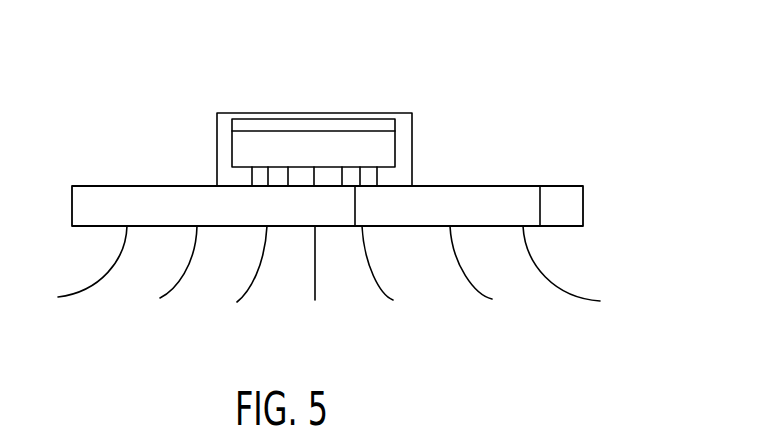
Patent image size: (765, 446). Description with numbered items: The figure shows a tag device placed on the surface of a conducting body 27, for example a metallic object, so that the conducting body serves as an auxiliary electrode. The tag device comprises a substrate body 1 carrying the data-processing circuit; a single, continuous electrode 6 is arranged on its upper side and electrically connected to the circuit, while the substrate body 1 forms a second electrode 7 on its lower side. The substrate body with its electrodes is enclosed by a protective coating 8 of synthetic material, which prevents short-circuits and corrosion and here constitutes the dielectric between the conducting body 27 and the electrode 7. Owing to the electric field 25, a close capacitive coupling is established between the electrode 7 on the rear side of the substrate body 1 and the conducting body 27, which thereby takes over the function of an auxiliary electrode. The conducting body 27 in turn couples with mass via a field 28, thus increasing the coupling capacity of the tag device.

The substrate body 1 is at (385, 150).
The single continuous electrode 6 is at (313, 125).
The second electrode 7 is at (386, 178).
The protective coating 8 is at (217, 145).
The electric field 25 is at (245, 176).
The conducting body 27 is at (327, 206).
The field 28 is at (552, 280).